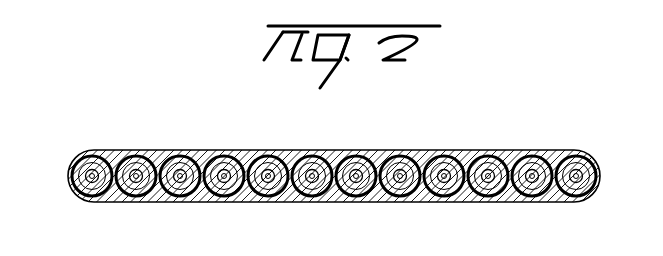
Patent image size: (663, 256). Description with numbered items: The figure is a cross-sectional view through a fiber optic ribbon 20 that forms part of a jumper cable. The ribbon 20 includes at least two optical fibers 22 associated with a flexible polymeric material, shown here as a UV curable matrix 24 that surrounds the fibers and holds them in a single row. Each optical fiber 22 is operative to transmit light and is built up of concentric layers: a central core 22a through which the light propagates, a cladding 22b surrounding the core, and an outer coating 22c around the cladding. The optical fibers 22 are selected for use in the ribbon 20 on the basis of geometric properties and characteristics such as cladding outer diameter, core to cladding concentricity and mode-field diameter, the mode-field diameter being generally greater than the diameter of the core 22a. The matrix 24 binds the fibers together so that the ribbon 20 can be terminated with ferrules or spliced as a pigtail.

The fiber optic ribbon 20 is at (534, 136).
The optical fibers 22 is at (522, 202).
The core 22a is at (402, 162).
The cladding 22b is at (415, 162).
The coating 22c is at (380, 157).
The UV curable matrix 24 is at (152, 150).